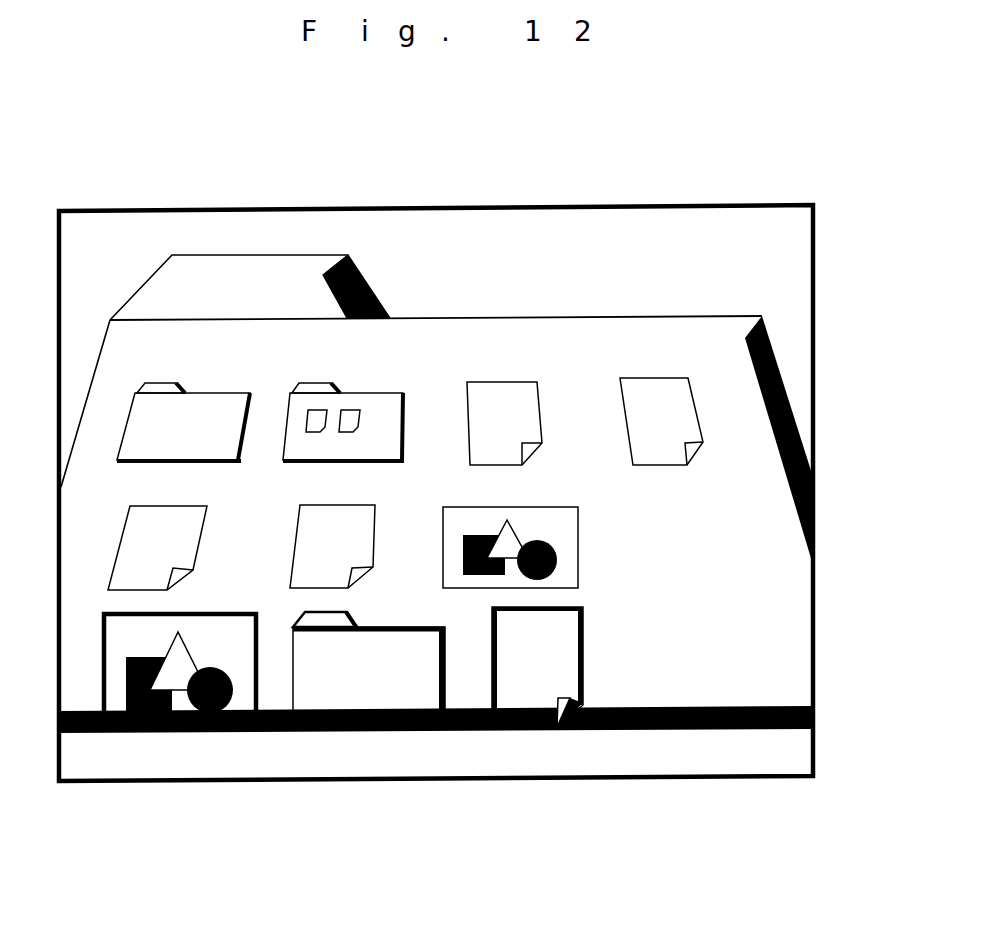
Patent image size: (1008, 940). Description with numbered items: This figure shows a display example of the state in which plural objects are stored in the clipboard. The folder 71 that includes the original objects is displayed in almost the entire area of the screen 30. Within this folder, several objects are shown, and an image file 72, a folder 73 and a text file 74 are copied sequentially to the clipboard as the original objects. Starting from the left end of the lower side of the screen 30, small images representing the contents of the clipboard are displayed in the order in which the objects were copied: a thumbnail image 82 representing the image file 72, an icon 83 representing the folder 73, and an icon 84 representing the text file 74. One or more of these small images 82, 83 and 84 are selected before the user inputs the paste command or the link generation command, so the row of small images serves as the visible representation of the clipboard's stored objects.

The screen 30 is at (775, 230).
The folder 71 is at (725, 338).
The image file 72 is at (567, 559).
The folder 73 is at (200, 408).
The text file 74 is at (492, 400).
The thumbnail image 82 is at (207, 718).
The icon 83 is at (393, 710).
The icon 84 is at (532, 712).